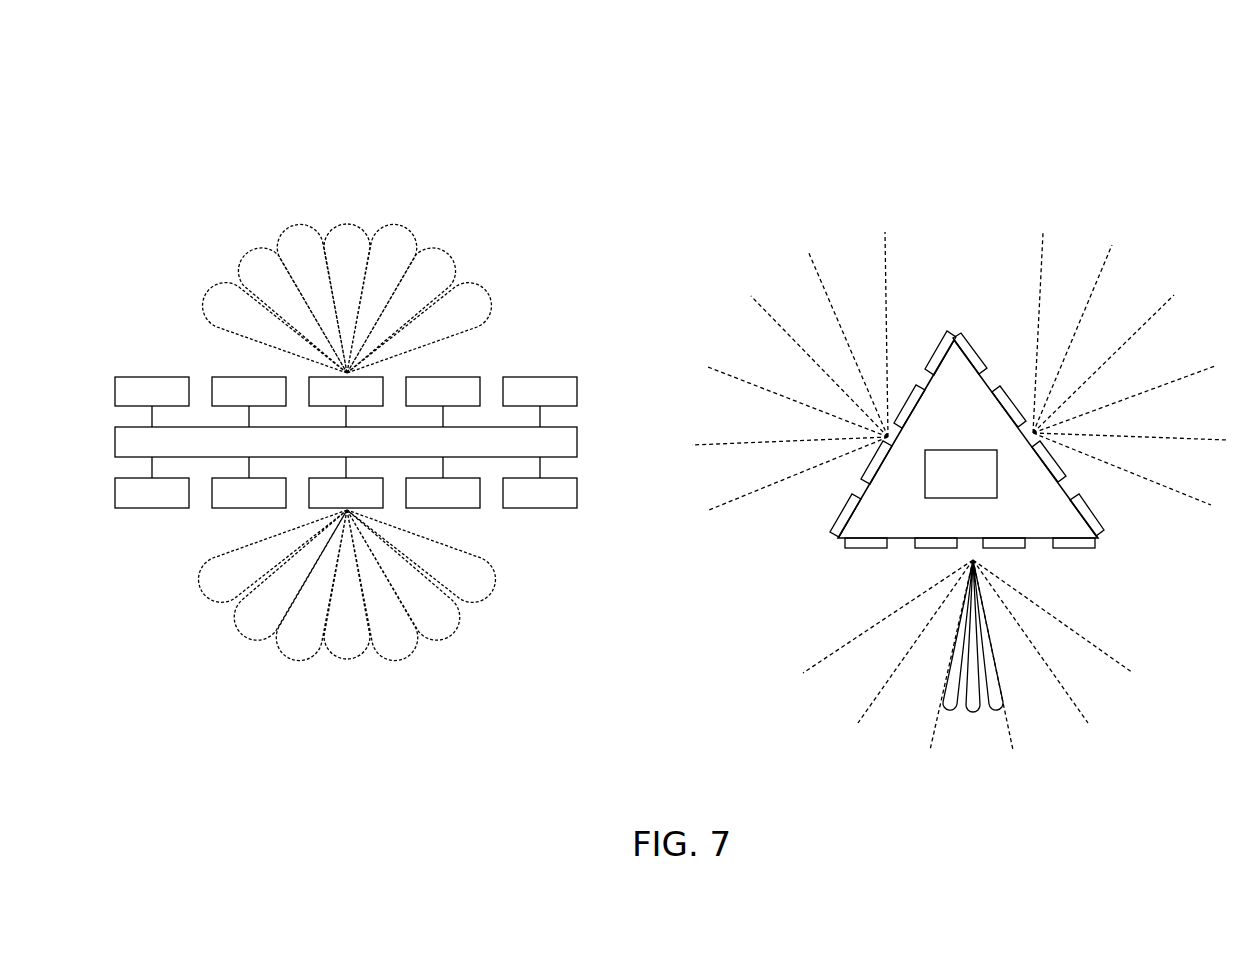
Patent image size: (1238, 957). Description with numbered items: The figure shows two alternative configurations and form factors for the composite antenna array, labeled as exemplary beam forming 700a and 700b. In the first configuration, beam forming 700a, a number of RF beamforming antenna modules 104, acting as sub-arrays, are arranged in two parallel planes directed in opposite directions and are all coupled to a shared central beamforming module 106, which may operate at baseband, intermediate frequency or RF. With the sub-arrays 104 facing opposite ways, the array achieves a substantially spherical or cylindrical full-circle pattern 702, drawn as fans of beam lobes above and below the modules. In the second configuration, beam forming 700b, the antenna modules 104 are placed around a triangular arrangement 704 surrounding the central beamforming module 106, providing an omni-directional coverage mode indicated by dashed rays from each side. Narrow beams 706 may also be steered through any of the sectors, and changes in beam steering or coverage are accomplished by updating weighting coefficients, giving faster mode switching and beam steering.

The beam forming 700a is at (378, 65).
The beam forming 700b is at (992, 65).
The RF beamforming antenna module 104 is at (138, 401).
The central beamforming module 106 is at (484, 451).
The 360-degree pattern 702 is at (239, 207).
The triangular arrangement 704 is at (770, 262).
The narrow beams 706 is at (982, 738).